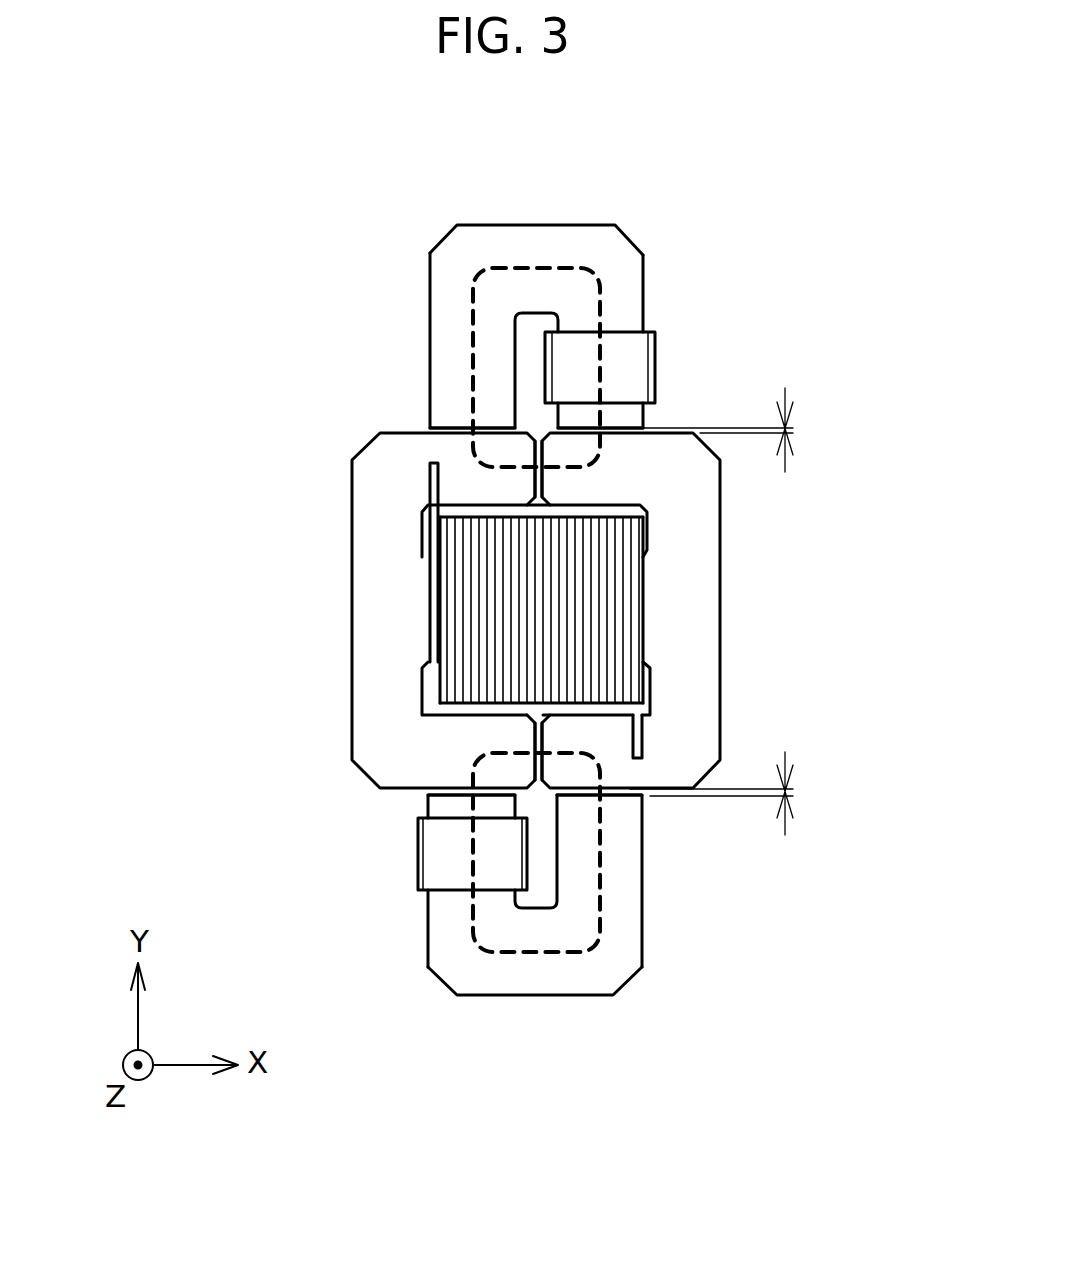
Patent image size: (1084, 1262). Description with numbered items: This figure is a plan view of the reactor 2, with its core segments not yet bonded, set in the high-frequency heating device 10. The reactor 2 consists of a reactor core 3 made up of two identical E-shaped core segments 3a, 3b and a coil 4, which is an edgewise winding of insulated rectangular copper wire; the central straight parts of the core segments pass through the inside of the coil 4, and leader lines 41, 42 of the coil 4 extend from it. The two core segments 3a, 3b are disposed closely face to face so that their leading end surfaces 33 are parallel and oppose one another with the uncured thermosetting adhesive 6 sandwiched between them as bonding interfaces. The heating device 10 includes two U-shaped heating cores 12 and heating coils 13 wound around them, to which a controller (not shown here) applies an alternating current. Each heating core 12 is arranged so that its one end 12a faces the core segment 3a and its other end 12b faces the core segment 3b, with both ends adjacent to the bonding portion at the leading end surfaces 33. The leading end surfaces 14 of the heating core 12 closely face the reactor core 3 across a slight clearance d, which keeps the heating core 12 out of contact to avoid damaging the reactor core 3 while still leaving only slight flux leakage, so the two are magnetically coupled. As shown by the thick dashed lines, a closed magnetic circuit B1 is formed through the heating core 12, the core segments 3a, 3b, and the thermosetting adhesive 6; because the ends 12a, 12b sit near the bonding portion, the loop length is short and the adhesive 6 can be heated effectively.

The reactor 2 is at (207, 775).
The reactor core 3 is at (563, 610).
The core segment 3a is at (365, 608).
The core segment 3b is at (705, 608).
The coil 4 is at (445, 622).
The thermosetting adhesive 6 is at (533, 506).
The high-frequency heating device 10 is at (785, 233).
The heating core 12 is at (635, 297).
The one end of the heating core 12a is at (443, 400).
The other end of the heating core 12b is at (628, 415).
The heating coil 13 is at (635, 353).
The leading end surface 14 is at (440, 433).
The leading end surface 33 is at (533, 498).
The leader line 41 is at (430, 488).
The leader line 42 is at (650, 737).
The closed magnetic circuit B1 is at (536, 265).
The clearance d is at (726, 611).